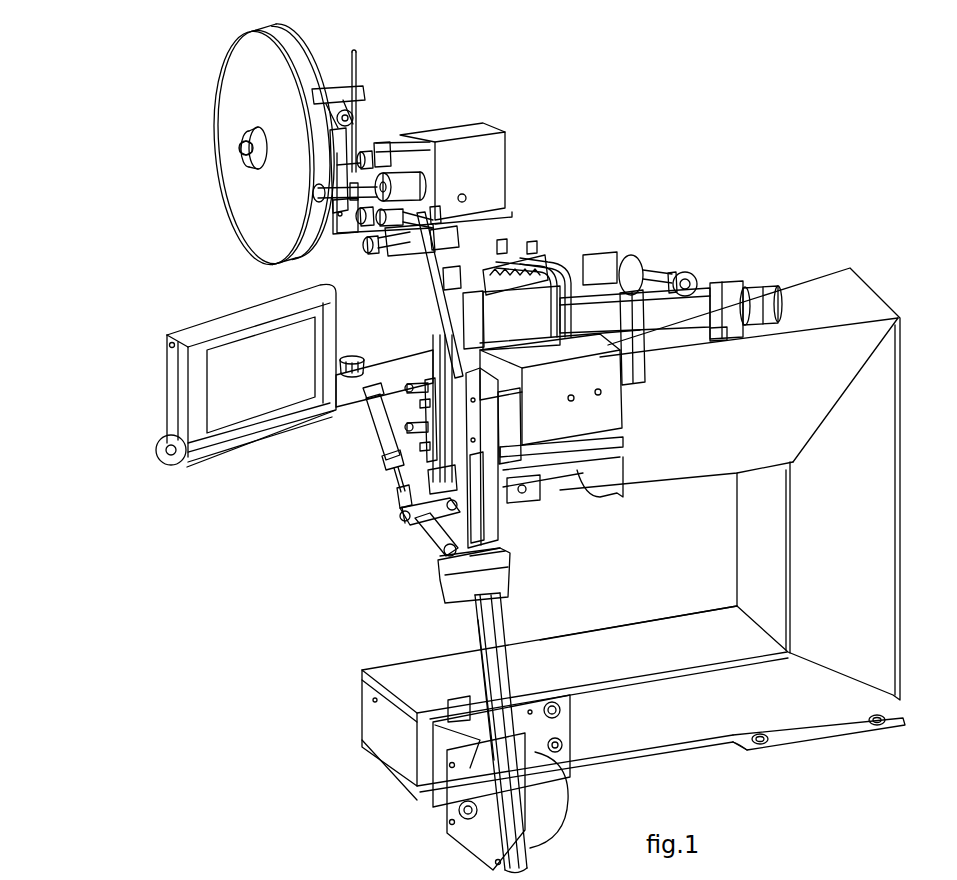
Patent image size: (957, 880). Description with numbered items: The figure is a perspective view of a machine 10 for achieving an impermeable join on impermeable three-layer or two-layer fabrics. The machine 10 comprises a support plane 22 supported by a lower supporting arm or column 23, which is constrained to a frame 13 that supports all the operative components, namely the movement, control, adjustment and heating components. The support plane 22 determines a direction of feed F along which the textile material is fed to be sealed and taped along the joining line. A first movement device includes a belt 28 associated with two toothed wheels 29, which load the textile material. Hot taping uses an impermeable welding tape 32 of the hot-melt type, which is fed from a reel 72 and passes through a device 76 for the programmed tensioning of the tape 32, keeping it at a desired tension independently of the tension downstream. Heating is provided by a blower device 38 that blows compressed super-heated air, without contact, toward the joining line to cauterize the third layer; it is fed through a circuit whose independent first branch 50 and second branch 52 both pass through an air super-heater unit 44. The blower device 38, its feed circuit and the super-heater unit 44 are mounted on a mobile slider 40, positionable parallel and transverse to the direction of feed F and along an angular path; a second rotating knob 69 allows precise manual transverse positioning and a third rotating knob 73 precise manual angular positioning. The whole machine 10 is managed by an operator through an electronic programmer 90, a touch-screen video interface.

The machine 10 is at (806, 100).
The frame 13 is at (648, 762).
The support plane 22 is at (497, 558).
The lower supporting arm or column 23 is at (508, 638).
The belt 28 is at (440, 530).
The toothed wheels 29 is at (417, 524).
The impermeable welding tape 32 is at (427, 262).
The blower device 38 is at (487, 513).
The mobile slider 40 is at (580, 254).
The air super-heater unit 44 is at (610, 424).
The first branch 50 is at (548, 292).
The second branch 52 is at (545, 262).
The second rotating knob 69 is at (760, 300).
The reel 72 is at (222, 58).
The third rotating knob 73 is at (693, 282).
The device for the programmed tensioning of the tape 76 is at (487, 106).
The electronic programmer 90 is at (182, 330).
The direction of feed F is at (490, 568).